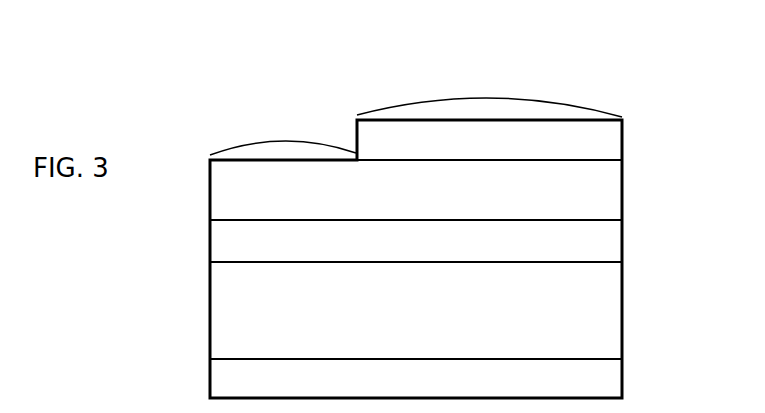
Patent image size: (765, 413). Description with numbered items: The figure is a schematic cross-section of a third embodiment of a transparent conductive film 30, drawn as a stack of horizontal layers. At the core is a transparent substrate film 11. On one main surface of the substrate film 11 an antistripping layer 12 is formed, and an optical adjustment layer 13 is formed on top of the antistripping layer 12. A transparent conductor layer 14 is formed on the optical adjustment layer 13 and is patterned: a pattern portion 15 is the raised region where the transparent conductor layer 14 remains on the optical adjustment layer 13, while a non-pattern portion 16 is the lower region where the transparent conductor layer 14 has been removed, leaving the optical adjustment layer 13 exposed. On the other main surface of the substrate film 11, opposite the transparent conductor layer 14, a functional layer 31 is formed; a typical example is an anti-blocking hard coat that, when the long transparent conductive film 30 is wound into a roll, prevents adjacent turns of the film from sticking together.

The transparent conductive film 30 is at (638, 72).
The functional layer 31 is at (622, 380).
The transparent substrate film 11 is at (622, 309).
The antistripping layer 12 is at (622, 244).
The optical adjustment layer 13 is at (622, 192).
The transparent conductor layer 14 is at (622, 142).
The pattern portion 15 is at (489, 94).
The non-pattern portion 16 is at (283, 136).